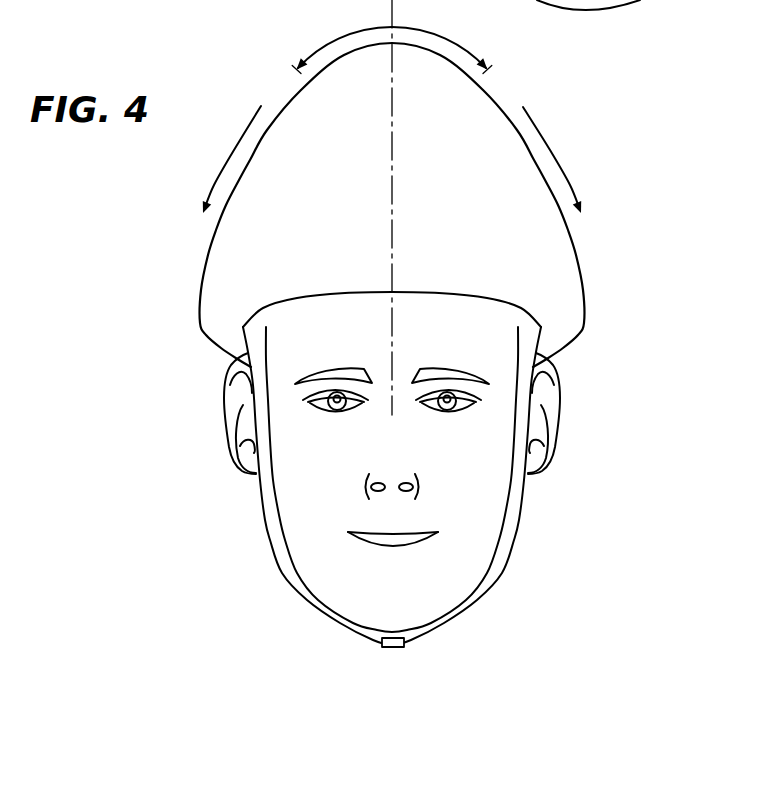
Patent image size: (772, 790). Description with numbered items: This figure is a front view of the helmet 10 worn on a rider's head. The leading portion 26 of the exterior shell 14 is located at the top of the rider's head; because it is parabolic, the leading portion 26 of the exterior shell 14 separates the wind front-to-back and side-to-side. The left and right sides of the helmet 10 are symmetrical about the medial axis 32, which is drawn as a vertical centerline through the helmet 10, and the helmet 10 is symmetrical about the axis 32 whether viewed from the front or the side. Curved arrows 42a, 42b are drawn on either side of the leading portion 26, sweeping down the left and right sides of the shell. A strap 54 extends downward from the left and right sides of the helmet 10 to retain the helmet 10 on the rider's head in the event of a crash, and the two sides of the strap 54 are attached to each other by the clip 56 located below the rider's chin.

The helmet 10 is at (423, 198).
The exterior shell 14 is at (562, 242).
The leading portion 26 is at (438, 33).
The medial axis 32 is at (393, 143).
The first rotational direction arrow 42a is at (244, 140).
The second rotational direction arrow 42b is at (557, 158).
The strap 54 is at (517, 540).
The clip 56 is at (393, 648).